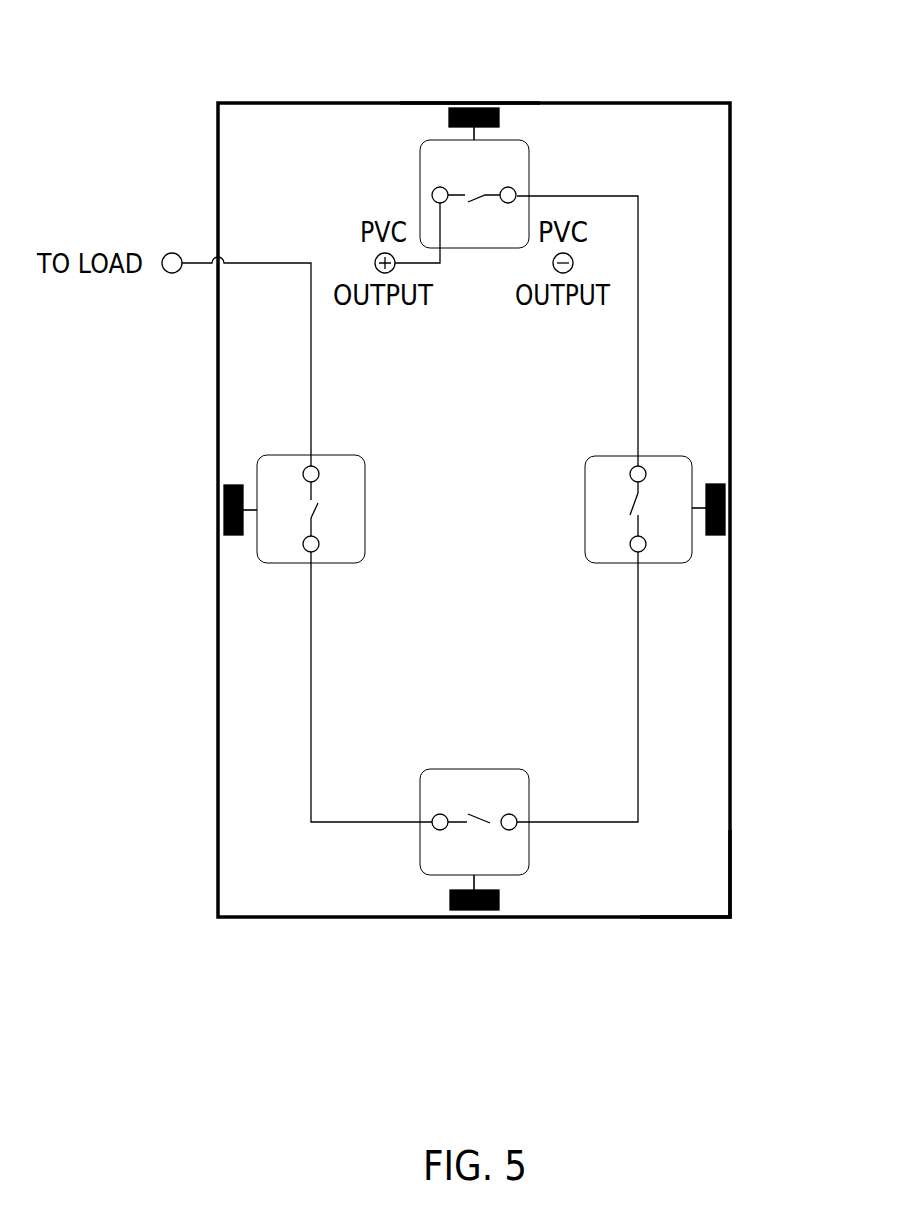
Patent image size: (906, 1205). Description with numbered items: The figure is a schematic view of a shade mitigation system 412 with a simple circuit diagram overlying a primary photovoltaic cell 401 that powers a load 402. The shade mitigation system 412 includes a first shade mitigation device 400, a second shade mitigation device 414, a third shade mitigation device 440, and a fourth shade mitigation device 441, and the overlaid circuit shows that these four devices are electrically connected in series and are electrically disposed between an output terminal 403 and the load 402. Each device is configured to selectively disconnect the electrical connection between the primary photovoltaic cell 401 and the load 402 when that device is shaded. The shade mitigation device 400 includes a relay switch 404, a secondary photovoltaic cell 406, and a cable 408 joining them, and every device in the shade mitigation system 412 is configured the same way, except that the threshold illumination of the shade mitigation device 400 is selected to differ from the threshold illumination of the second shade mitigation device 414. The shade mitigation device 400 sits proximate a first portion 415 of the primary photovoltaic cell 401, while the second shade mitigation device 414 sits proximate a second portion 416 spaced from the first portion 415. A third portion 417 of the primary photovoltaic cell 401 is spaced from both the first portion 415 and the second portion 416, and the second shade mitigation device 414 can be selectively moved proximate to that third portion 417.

The shade mitigation device 400 is at (474, 260).
The primary photovoltaic cell 401 is at (718, 108).
The load 402 is at (167, 254).
The output terminal 403 is at (375, 258).
The relay switch 404 is at (529, 163).
The secondary photovoltaic cell 406 is at (490, 107).
The cable 408 is at (474, 134).
The shade mitigation system 412 is at (320, 211).
The second shade mitigation device 414 is at (574, 447).
The first portion 415 is at (466, 102).
The second portion 416 is at (733, 508).
The third portion 417 is at (733, 887).
The third shade mitigation device 440 is at (471, 759).
The fourth shade mitigation device 441 is at (374, 447).